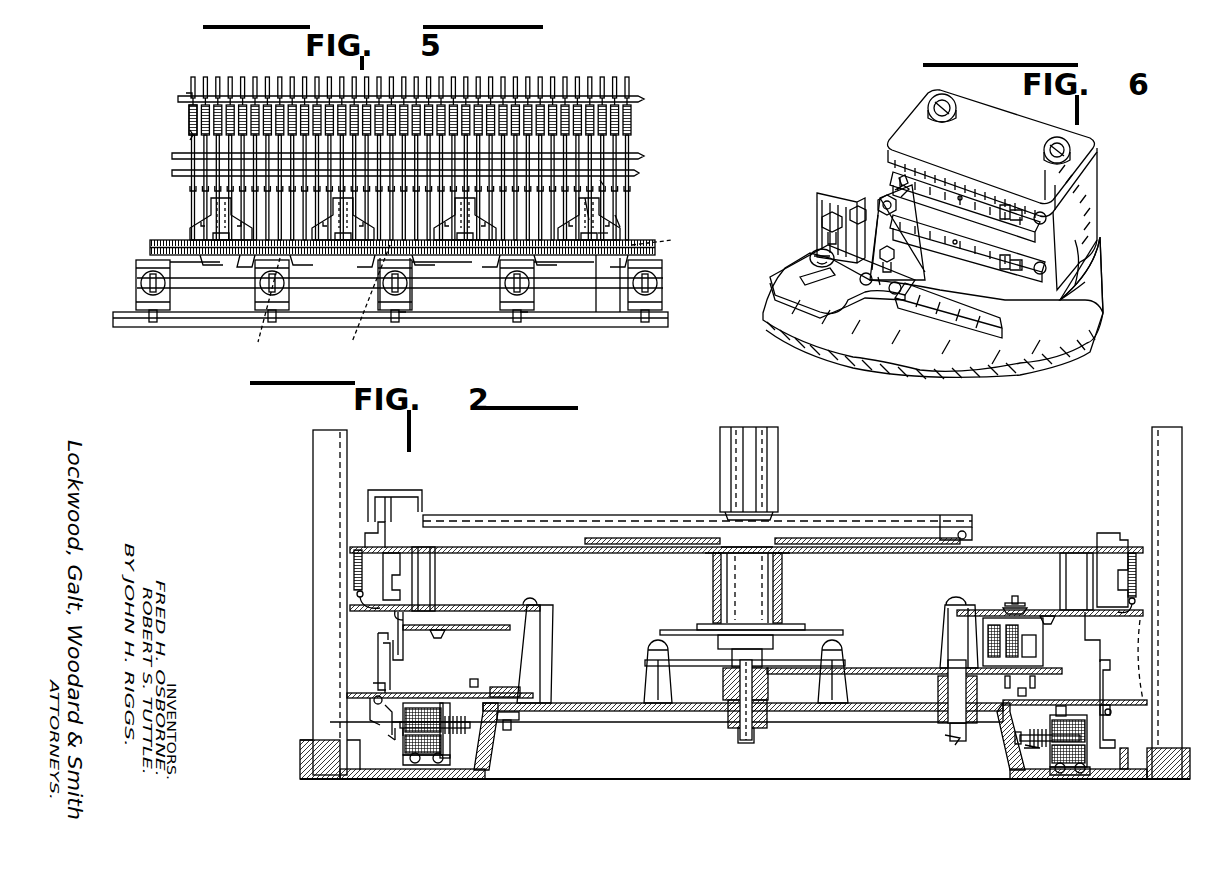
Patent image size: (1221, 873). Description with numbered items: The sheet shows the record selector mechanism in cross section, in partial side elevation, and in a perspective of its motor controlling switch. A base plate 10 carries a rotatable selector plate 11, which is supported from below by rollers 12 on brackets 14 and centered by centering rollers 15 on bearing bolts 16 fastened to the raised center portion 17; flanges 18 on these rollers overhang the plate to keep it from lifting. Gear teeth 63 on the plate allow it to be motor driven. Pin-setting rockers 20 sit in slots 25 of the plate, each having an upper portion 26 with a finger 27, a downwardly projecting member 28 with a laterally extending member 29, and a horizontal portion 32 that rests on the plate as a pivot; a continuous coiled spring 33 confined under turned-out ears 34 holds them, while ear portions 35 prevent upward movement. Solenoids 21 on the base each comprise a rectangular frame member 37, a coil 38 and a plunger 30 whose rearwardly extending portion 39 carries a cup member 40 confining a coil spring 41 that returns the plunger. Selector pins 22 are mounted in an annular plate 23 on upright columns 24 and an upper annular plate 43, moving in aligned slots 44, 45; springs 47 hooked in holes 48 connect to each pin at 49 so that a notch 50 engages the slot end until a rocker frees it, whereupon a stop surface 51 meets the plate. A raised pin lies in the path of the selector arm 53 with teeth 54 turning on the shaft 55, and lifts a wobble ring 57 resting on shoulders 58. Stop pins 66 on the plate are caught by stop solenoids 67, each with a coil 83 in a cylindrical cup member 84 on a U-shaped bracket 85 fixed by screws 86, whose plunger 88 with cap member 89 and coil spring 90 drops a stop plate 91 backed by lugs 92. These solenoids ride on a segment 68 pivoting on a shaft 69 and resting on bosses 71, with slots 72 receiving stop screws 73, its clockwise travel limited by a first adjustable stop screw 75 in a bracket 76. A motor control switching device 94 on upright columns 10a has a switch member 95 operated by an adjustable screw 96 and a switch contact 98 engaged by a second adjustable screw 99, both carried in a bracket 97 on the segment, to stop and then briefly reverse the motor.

In FIG. 5, the base plate 10 is at (236, 326).
In FIG. 6, the base plate 10 is at (1078, 328).
In FIG. 2, the base plate 10 is at (300, 755).
In FIG. 6, the upright columns 10a is at (1083, 280).
In FIG. 5, the selector plate 11 is at (150, 246).
In FIG. 2, the selector plate 11 is at (348, 694).
In FIG. 2, the rollers 12 is at (452, 686).
In FIG. 2, the brackets 14 is at (480, 722).
In FIG. 2, the centering rollers 15 is at (556, 692).
In FIG. 2, the bearing bolts 16 is at (512, 728).
In FIG. 2, the raised center portion 17 is at (548, 712).
In FIG. 2, the flanges 18 is at (558, 672).
In FIG. 5, the pin-setting rockers 20 is at (590, 222).
In FIG. 2, the pin-setting rockers 20 is at (378, 650).
In FIG. 2, the solenoids 21 is at (424, 755).
In FIG. 5, the selector pins 22 is at (219, 78).
In FIG. 2, the selector pins 22 is at (395, 593).
In FIG. 5, the annular plate 23 is at (178, 154).
In FIG. 2, the annular plate 23 is at (490, 605).
In FIG. 2, the upright columns 24 is at (554, 635).
In FIG. 2, the slots 25 is at (400, 694).
In FIG. 5, the upper portion 26 is at (640, 225).
In FIG. 2, the upper portion 26 is at (404, 662).
In FIG. 5, the finger 27 is at (612, 192).
In FIG. 2, the finger 27 is at (380, 640).
In FIG. 5, the downwardly projecting member 28 is at (597, 262).
In FIG. 2, the downwardly projecting member 28 is at (386, 718).
In FIG. 5, the laterally extending member 29 is at (556, 290).
In FIG. 2, the laterally extending member 29 is at (395, 726).
In FIG. 5, the plungers 30 is at (140, 290).
In FIG. 2, the plungers 30 is at (398, 740).
In FIG. 5, the horizontal portion 32 is at (606, 236).
In FIG. 2, the horizontal portion 32 is at (375, 684).
In FIG. 5, the coiled spring 33 is at (470, 265).
In FIG. 2, the coiled spring 33 is at (372, 698).
In FIG. 5, the turned-out ears 34 is at (622, 270).
In FIG. 2, the turned-out ears 34 is at (368, 706).
In FIG. 5, the ear portions 35 is at (479, 295).
In FIG. 2, the ear portions 35 is at (392, 742).
In FIG. 5, the rectangular frame member 37 is at (401, 298).
In FIG. 2, the rectangular frame member 37 is at (406, 770).
In FIG. 5, the coil 38 is at (392, 292).
In FIG. 2, the coil 38 is at (431, 745).
In FIG. 2, the rearwardly extending portion 39 is at (1034, 756).
In FIG. 2, the cup member 40 is at (1020, 737).
In FIG. 2, the coil spring 41 is at (1008, 780).
In FIG. 5, the upper annular plate 43 is at (187, 96).
In FIG. 2, the upper annular plate 43 is at (547, 553).
In FIG. 2, the slots 44 is at (1152, 613).
In FIG. 2, the slots 45 is at (1093, 532).
In FIG. 5, the springs 47 is at (190, 110).
In FIG. 2, the springs 47 is at (352, 565).
In FIG. 5, the holes 48 is at (192, 98).
In FIG. 2, the holes 48 is at (356, 545).
In FIG. 5, the spring connection 49 is at (190, 135).
In FIG. 2, the spring connection 49 is at (357, 598).
In FIG. 2, the notch 50 is at (358, 611).
In FIG. 2, the stop surface 51 is at (410, 606).
In FIG. 2, the selector arm 53 is at (582, 514).
In FIG. 2, the teeth 54 is at (368, 507).
In FIG. 2, the shaft 55 is at (765, 428).
In FIG. 5, the wobble ring 57 is at (178, 172).
In FIG. 2, the wobble ring 57 is at (1046, 609).
In FIG. 2, the shoulder 58 is at (1120, 646).
In FIG. 5, the gear teeth 63 is at (190, 240).
In FIG. 2, the gear teeth 63 is at (1112, 706).
In FIG. 2, the stop pins 66 is at (474, 679).
In FIG. 2, the stop solenoids 67 is at (967, 650).
In FIG. 6, the segment 68 is at (985, 325).
In FIG. 2, the segment 68 is at (855, 668).
In FIG. 2, the shaft 69 is at (722, 684).
In FIG. 2, the bosses 71 is at (938, 694).
In FIG. 6, the slots 72 is at (800, 283).
In FIG. 6, the stop screws 73 is at (812, 255).
In FIG. 6, the first adjustable stop screw 75 is at (820, 228).
In FIG. 6, the bracket 76 is at (825, 192).
In FIG. 2, the coil 83 is at (990, 640).
In FIG. 2, the cylindrical cup member 84 is at (1032, 640).
In FIG. 2, the U-shaped bracket 85 is at (1040, 652).
In FIG. 2, the screws 86 is at (1048, 672).
In FIG. 2, the plunger 88 is at (1017, 596).
In FIG. 2, the cap member 89 is at (1012, 602).
In FIG. 2, the coil spring 90 is at (1004, 608).
In FIG. 2, the stop plate 91 is at (1005, 682).
In FIG. 2, the lugs 92 is at (1036, 688).
In FIG. 6, the motor control switching device 94 is at (1109, 158).
In FIG. 6, the switch member 95 is at (935, 192).
In FIG. 6, the adjustable screw 96 is at (900, 185).
In FIG. 6, the bracket 97 is at (925, 278).
In FIG. 6, the switch contact 98 is at (960, 235).
In FIG. 6, the second adjustable screw 99 is at (885, 272).